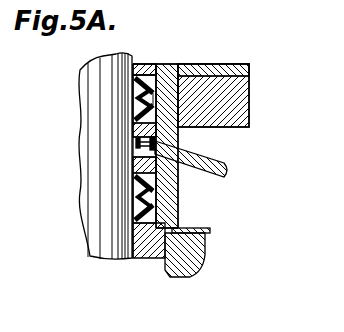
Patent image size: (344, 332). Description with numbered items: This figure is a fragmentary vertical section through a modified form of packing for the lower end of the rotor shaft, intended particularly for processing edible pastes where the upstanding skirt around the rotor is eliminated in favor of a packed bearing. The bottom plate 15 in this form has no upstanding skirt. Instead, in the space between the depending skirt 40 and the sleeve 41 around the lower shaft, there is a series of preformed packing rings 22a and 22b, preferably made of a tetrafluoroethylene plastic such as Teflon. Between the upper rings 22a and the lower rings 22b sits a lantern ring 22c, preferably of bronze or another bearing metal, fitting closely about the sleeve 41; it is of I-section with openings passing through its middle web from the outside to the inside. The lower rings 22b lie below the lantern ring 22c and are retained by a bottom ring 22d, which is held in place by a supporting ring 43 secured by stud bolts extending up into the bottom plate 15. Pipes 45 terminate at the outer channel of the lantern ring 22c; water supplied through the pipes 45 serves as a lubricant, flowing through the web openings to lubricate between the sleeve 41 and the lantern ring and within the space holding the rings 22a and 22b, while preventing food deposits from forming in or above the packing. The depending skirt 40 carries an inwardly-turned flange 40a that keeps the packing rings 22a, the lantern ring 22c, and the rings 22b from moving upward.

The bottom plate 15 is at (244, 97).
The packing rings 22a is at (134, 116).
The packing rings 22b is at (134, 207).
The lantern ring 22c is at (170, 133).
The bottom ring 22d is at (176, 238).
The depending skirt 40 is at (181, 191).
The inwardly-turned flange 40a is at (147, 64).
The sleeve 41 is at (88, 142).
The supporting ring 43 is at (182, 261).
The pipes 45 is at (218, 164).